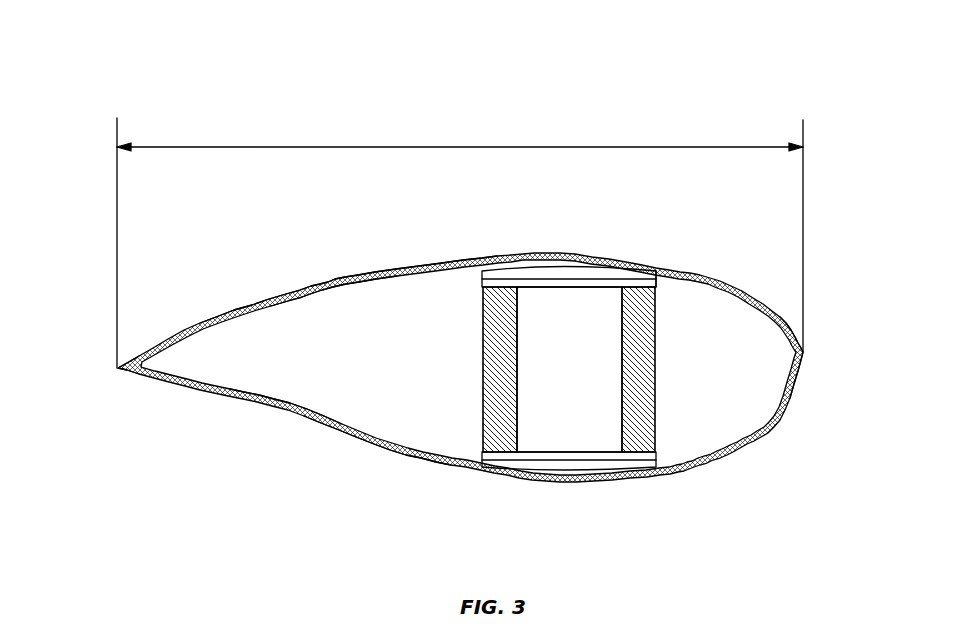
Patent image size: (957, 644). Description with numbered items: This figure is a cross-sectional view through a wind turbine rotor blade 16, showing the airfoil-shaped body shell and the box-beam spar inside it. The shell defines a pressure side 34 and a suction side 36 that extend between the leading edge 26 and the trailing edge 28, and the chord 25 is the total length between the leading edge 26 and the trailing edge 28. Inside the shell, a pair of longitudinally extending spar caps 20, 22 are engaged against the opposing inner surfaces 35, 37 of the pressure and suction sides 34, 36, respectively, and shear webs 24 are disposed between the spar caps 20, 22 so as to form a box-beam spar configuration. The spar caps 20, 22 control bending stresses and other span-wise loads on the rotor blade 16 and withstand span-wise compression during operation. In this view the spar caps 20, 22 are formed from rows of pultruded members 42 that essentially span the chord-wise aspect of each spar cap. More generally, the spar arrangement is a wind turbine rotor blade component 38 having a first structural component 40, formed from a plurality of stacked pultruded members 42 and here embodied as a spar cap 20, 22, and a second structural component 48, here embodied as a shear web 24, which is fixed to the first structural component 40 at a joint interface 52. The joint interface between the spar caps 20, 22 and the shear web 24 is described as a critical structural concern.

The rotor blade 16 is at (735, 95).
The spar cap 20 is at (567, 379).
The spar cap 22 is at (552, 504).
The shear web 24 is at (482, 375).
The chord 25 is at (338, 147).
The leading edge 26 is at (805, 366).
The trailing edge 28 is at (118, 370).
The pressure side 34 is at (390, 450).
The inner surface of pressure side 35 is at (288, 408).
The suction side 36 is at (358, 276).
The inner surface of suction side 37 is at (332, 298).
The wind turbine rotor blade component 38 is at (457, 301).
The first structural component 40 is at (612, 258).
The pultruded member 42 is at (490, 463).
The second structural component 48 is at (530, 394).
The joint interface 52 is at (676, 296).